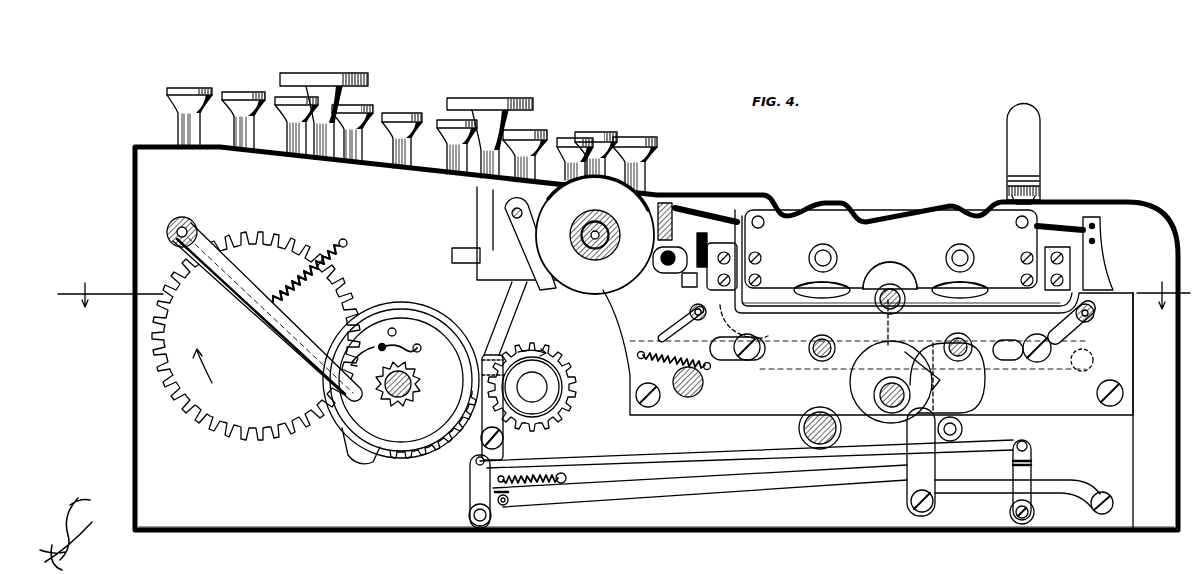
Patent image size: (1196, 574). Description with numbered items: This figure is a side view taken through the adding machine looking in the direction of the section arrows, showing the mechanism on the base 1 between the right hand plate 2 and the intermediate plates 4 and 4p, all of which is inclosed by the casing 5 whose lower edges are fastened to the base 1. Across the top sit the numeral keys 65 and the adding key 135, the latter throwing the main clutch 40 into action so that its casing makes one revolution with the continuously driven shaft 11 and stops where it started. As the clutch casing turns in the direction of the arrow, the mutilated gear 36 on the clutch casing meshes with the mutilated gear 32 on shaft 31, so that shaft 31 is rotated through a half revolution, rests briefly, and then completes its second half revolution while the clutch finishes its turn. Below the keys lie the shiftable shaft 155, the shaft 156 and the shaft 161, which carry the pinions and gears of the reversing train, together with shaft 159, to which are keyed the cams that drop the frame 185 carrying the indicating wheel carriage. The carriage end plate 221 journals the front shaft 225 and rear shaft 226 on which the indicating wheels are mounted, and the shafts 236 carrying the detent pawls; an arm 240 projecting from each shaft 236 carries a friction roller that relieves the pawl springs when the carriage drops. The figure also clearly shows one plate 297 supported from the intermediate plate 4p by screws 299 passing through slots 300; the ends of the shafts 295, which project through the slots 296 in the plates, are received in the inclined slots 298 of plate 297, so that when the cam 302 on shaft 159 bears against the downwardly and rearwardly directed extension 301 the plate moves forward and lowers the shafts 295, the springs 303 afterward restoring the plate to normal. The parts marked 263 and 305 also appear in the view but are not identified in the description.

The base 1 is at (735, 536).
The right hand plate 2 is at (624, 286).
The intermediate plate 4 is at (656, 506).
The intermediate plate 4p is at (770, 415).
The casing 5 is at (705, 203).
The shaft 11 is at (388, 400).
The shaft 31 is at (540, 395).
The mutilated gear 32 is at (555, 418).
The mutilated gear 36 is at (420, 467).
The main clutch 40 is at (345, 425).
The numeral keys 65 is at (198, 88).
The adding key 135 is at (498, 100).
The shaft 155 is at (820, 447).
The shaft 156 is at (815, 355).
The shaft 159 is at (892, 385).
The shaft 161 is at (956, 344).
The frame 185 is at (905, 481).
The end plate 221 is at (897, 287).
The front shaft 225 is at (820, 255).
The rear shaft 226 is at (965, 256).
The shaft 236 is at (762, 218).
The arm 240 is at (743, 205).
The key 263 is at (366, 72).
The shaft 295 is at (698, 312).
The slots 296 is at (1090, 319).
The plate 297 is at (901, 319).
The inclined slots 298 is at (676, 336).
The screws 299 is at (757, 357).
The slots 300 is at (1018, 397).
The extension 301 is at (976, 384).
The cam 302 is at (880, 415).
The springs 303 is at (665, 366).
The stud 305 is at (893, 293).